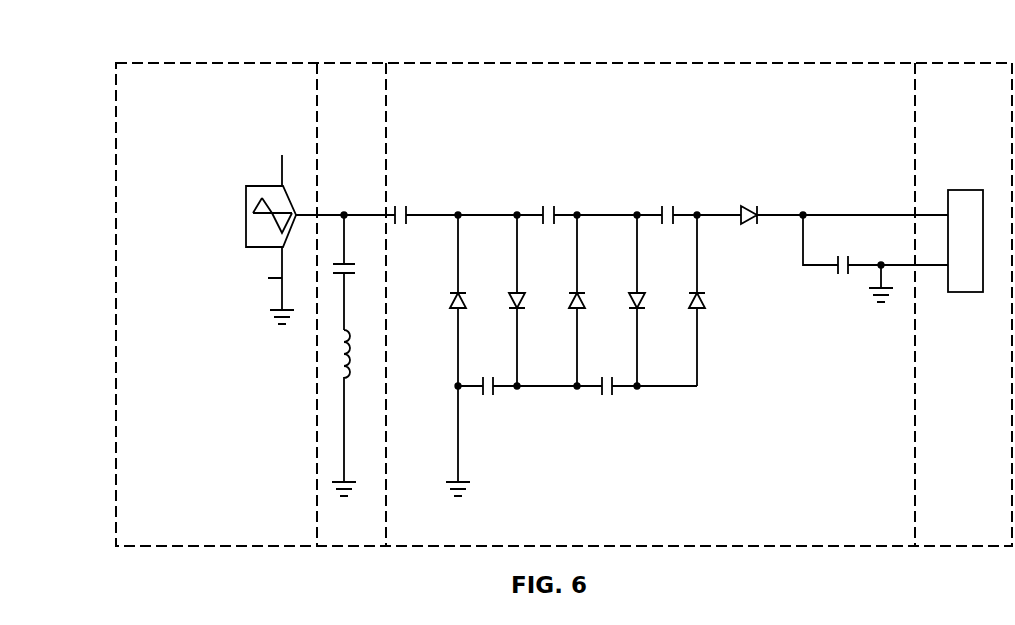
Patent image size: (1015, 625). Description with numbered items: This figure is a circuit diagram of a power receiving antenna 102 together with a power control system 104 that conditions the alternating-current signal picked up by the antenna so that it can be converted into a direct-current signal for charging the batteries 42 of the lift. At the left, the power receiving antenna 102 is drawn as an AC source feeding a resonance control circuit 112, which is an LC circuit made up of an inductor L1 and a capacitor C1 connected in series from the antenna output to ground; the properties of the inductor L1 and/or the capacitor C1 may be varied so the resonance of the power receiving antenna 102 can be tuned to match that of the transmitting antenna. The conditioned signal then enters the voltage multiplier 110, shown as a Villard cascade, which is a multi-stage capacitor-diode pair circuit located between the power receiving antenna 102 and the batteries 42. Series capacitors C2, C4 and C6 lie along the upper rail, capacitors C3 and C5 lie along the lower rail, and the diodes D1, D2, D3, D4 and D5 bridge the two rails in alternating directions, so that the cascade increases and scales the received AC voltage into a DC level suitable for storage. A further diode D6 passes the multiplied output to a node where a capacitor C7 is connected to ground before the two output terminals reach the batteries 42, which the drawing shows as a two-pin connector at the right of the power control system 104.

The power control system 104 is at (605, 24).
The power receiving antenna 102 is at (116, 165).
The resonance control circuit 112 is at (345, 63).
The voltage multiplier 110 is at (480, 63).
The batteries 42 is at (960, 63).
The capacitor C1 is at (359, 271).
The inductor L1 is at (357, 413).
The capacitor C2 is at (423, 200).
The capacitor C3 is at (530, 371).
The capacitor C4 is at (599, 200).
The capacitor C5 is at (646, 371).
The capacitor C6 is at (698, 200).
The capacitor C7 is at (875, 244).
The diode D1 is at (477, 300).
The diode D2 is at (536, 300).
The diode D3 is at (596, 300).
The diode D4 is at (656, 300).
The diode D5 is at (716, 300).
The diode D6 is at (769, 200).